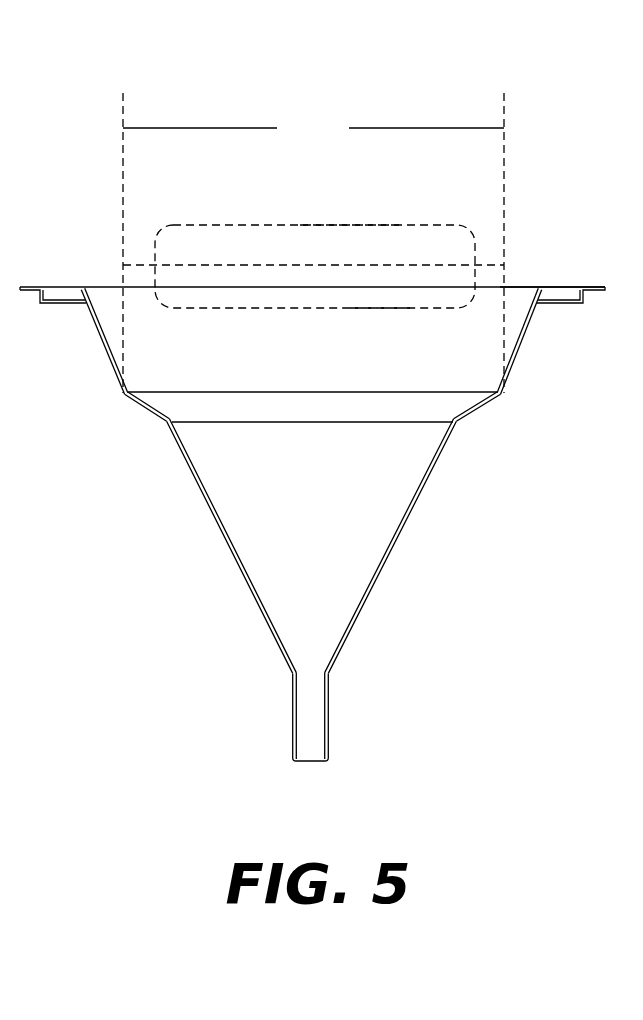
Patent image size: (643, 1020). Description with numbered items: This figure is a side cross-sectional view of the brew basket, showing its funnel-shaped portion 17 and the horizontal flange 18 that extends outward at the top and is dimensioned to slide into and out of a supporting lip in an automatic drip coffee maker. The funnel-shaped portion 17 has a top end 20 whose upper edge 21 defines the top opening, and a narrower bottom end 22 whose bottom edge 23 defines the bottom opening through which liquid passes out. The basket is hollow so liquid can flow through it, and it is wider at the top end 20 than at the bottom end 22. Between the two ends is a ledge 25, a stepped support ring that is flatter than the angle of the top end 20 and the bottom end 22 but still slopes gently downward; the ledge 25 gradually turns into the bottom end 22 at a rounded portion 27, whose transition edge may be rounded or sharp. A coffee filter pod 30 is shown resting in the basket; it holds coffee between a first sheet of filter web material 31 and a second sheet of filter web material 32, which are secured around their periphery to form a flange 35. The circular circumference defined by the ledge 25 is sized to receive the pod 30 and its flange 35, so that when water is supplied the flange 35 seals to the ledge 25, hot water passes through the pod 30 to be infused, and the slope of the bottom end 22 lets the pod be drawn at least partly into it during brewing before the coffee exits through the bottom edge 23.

The funnel-shaped portion 17 is at (172, 439).
The flange 18 is at (60, 288).
The top end 20 is at (518, 362).
The upper edge 21 is at (547, 289).
The bottom end 22 is at (383, 570).
The bottom edge 23 is at (329, 760).
The ledge 25 is at (482, 405).
The rounded portion 27 is at (460, 424).
The coffee filter pod 30 is at (265, 246).
The first sheet of filter web material 31 is at (343, 226).
The second sheet of filter web material 32 is at (362, 307).
The flange 35 is at (135, 264).